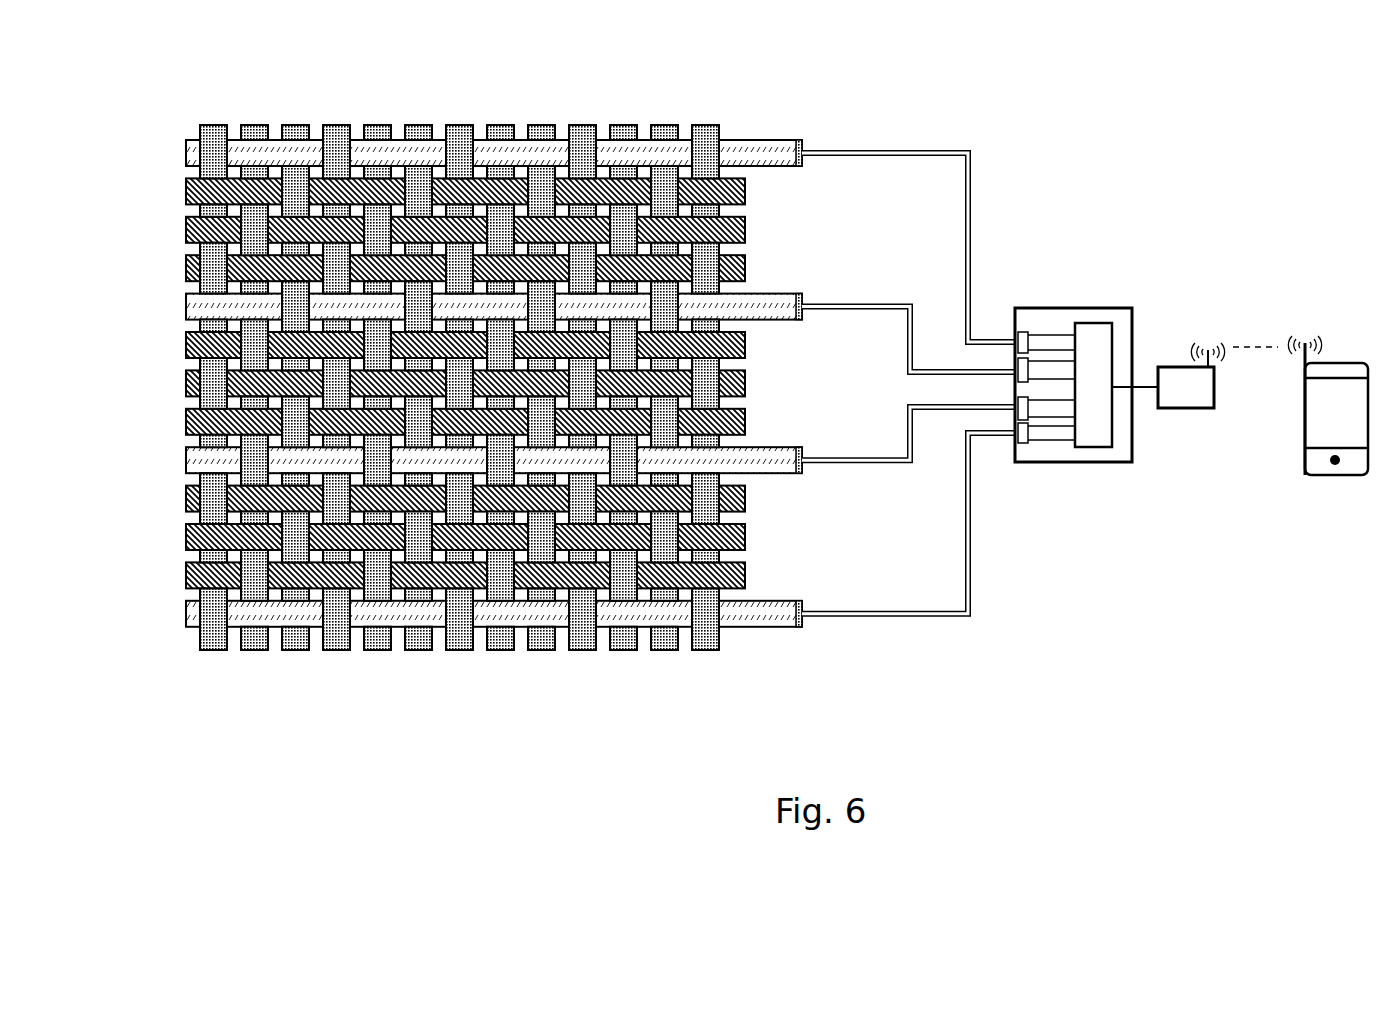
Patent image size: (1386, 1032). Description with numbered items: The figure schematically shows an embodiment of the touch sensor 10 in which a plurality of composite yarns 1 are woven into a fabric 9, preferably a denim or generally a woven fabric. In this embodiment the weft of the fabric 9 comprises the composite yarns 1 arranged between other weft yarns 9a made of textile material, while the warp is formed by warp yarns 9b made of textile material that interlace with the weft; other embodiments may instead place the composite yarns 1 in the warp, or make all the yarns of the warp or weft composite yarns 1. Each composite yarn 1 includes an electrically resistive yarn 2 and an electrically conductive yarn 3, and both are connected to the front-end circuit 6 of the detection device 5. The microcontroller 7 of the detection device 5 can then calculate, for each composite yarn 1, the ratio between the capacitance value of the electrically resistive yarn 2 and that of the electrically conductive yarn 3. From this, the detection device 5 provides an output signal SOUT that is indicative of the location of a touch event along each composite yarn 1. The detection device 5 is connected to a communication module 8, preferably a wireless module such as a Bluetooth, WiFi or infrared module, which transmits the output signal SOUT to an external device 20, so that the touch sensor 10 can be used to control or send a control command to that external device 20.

The composite yarn 1 is at (755, 136).
The electrically resistive yarn 2 is at (815, 159).
The electrically conductive yarn 3 is at (815, 147).
The detection device 5 is at (1122, 305).
The front-end circuit 6 is at (1023, 328).
The microcontroller 7 is at (1095, 449).
The communication module 8 is at (1190, 408).
The fabric 9 is at (172, 107).
The weft yarns 9a is at (182, 388).
The warp yarns 9b is at (461, 121).
The touch sensor 10 is at (1218, 66).
The external device 20 is at (1305, 476).
The output signal SOUT is at (1145, 378).